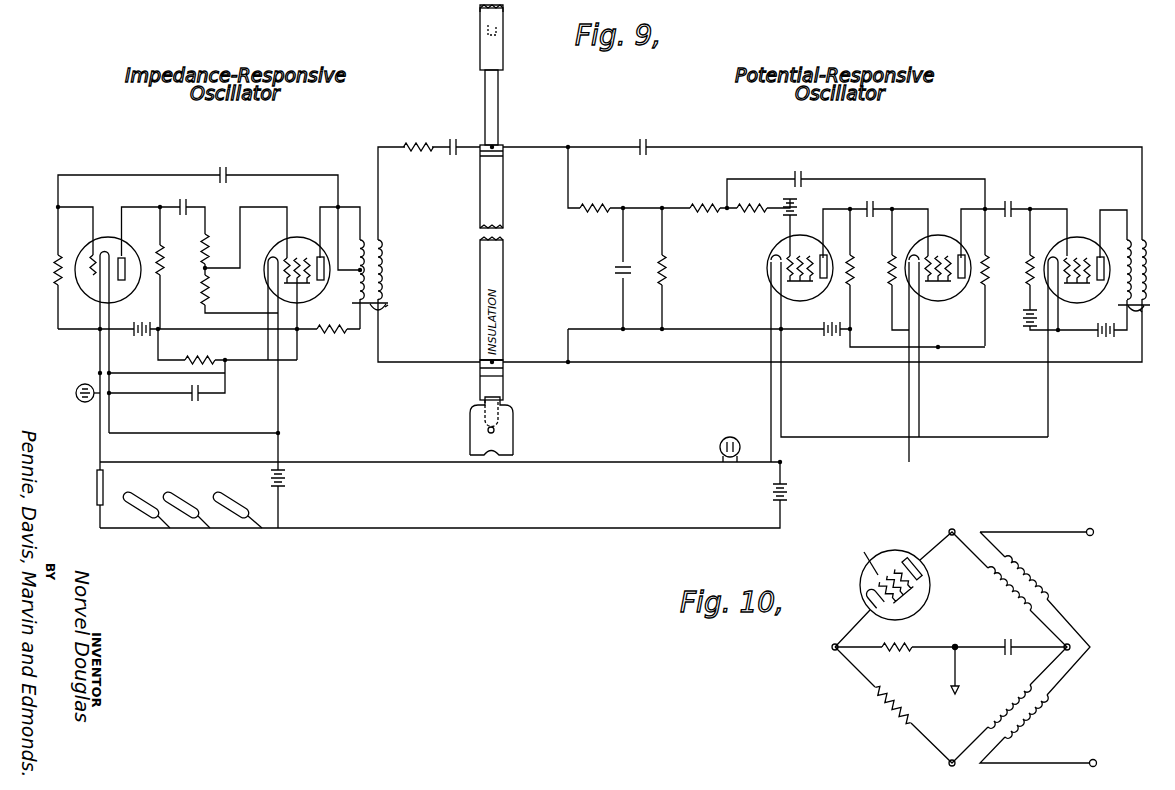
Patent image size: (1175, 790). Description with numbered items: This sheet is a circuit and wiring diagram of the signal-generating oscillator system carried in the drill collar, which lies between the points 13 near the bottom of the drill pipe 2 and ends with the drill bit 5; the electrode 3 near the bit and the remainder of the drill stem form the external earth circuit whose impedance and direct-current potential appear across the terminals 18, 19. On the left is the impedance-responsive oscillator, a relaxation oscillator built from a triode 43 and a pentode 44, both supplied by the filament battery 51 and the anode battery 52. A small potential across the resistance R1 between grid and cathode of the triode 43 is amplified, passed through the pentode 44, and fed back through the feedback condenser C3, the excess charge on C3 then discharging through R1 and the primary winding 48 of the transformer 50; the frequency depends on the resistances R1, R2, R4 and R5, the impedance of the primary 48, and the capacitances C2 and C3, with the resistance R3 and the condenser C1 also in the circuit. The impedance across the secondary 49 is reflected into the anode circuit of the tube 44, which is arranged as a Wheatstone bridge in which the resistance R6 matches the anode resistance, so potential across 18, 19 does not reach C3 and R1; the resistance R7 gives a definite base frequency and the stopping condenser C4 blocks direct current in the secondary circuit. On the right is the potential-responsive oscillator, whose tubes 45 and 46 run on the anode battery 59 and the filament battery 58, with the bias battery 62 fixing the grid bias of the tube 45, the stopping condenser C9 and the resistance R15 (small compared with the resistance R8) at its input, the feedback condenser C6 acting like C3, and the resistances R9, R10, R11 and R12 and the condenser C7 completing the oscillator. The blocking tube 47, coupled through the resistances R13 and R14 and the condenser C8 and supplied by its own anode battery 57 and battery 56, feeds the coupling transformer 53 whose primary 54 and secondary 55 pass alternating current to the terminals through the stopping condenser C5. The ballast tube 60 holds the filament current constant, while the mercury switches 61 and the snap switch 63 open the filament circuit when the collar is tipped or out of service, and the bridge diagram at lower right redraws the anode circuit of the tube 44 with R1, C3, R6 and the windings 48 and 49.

In FIG. 9, the drill pipe 2 is at (504, 12).
In FIG. 9, the drill collar points 13 is at (485, 50).
In FIG. 9, the terminal 19 is at (497, 150).
In FIG. 9, the terminal 18 is at (484, 366).
In FIG. 9, the electrode 3 is at (504, 372).
In FIG. 9, the drill bit 5 is at (505, 431).
In FIG. 9, the triode 43 is at (108, 237).
In FIG. 9, the pentode 44 is at (297, 237).
In FIG. 10, the pentode 44 is at (858, 588).
In FIG. 9, the vacuum tube 45 is at (808, 237).
In FIG. 9, the vacuum tube 46 is at (940, 236).
In FIG. 9, the blocking tube 47 is at (1079, 238).
In FIG. 9, the primary winding 48 is at (352, 302).
In FIG. 10, the primary winding 48 is at (1003, 702).
In FIG. 9, the secondary 49 is at (383, 276).
In FIG. 10, the secondary 49 is at (1038, 718).
In FIG. 9, the transformer 50 is at (384, 306).
In FIG. 9, the filament battery 51 is at (290, 478).
In FIG. 9, the anode battery 52 is at (143, 322).
In FIG. 9, the coupling transformer 53 is at (1138, 310).
In FIG. 9, the primary 54 is at (1124, 248).
In FIG. 9, the secondary 55 is at (1145, 250).
In FIG. 9, the battery 56 is at (1022, 322).
In FIG. 9, the anode battery 57 is at (1108, 340).
In FIG. 9, the filament battery 58 is at (770, 492).
In FIG. 9, the anode battery 59 is at (832, 338).
In FIG. 9, the ballast tube 60 is at (77, 389).
In FIG. 9, the mercury switches 61 is at (208, 494).
In FIG. 9, the bias battery 62 is at (784, 217).
In FIG. 9, the snap switch 63 is at (96, 481).
In FIG. 9, the condenser C1 is at (194, 402).
In FIG. 9, the capacitance C2 is at (178, 205).
In FIG. 9, the feedback condenser C3 is at (227, 170).
In FIG. 10, the feedback condenser C3 is at (1007, 661).
In FIG. 9, the stopping condenser C4 is at (452, 140).
In FIG. 9, the stopping condenser C5 is at (647, 141).
In FIG. 9, the feedback condenser C6 is at (802, 175).
In FIG. 9, the condenser C7 is at (873, 205).
In FIG. 9, the condenser C8 is at (1009, 204).
In FIG. 9, the stopping condenser C9 is at (617, 268).
In FIG. 9, the resistance R1 is at (55, 268).
In FIG. 10, the resistance R1 is at (897, 661).
In FIG. 9, the resistance R2 is at (163, 268).
In FIG. 9, the resistance R3 is at (200, 350).
In FIG. 9, the resistance R4 is at (208, 260).
In FIG. 9, the resistance R5 is at (208, 300).
In FIG. 9, the resistance R6 is at (332, 342).
In FIG. 10, the resistance R6 is at (888, 708).
In FIG. 9, the resistance R7 is at (418, 160).
In FIG. 9, the resistance R8 is at (666, 270).
In FIG. 9, the resistance R9 is at (704, 223).
In FIG. 9, the resistance R10 is at (752, 214).
In FIG. 9, the resistance R11 is at (853, 282).
In FIG. 9, the resistance R12 is at (888, 262).
In FIG. 9, the resistance R13 is at (982, 290).
In FIG. 9, the resistance R14 is at (1026, 282).
In FIG. 9, the resistance R15 is at (593, 205).